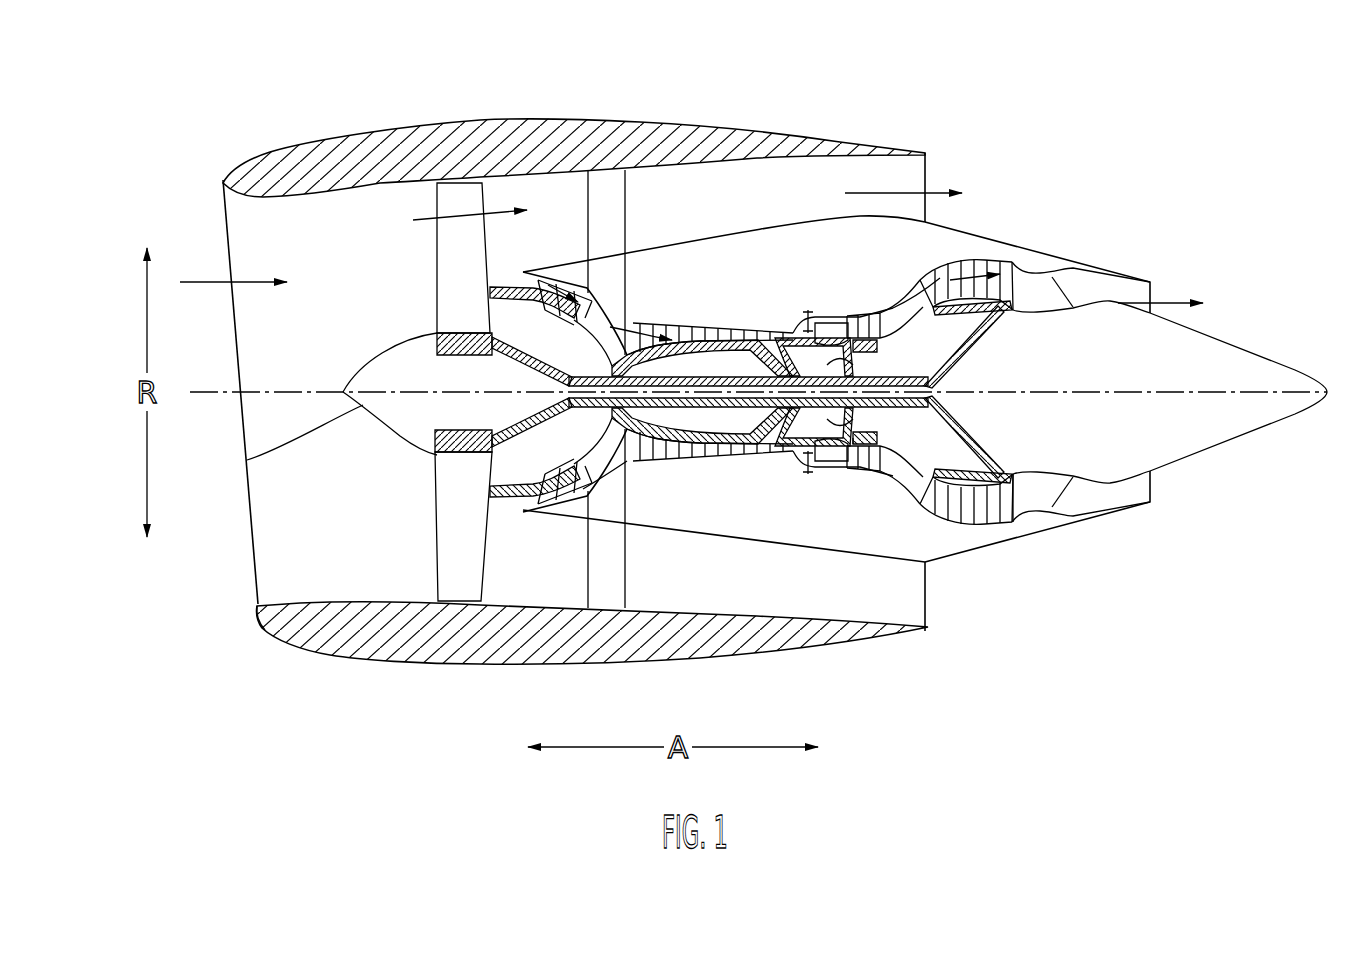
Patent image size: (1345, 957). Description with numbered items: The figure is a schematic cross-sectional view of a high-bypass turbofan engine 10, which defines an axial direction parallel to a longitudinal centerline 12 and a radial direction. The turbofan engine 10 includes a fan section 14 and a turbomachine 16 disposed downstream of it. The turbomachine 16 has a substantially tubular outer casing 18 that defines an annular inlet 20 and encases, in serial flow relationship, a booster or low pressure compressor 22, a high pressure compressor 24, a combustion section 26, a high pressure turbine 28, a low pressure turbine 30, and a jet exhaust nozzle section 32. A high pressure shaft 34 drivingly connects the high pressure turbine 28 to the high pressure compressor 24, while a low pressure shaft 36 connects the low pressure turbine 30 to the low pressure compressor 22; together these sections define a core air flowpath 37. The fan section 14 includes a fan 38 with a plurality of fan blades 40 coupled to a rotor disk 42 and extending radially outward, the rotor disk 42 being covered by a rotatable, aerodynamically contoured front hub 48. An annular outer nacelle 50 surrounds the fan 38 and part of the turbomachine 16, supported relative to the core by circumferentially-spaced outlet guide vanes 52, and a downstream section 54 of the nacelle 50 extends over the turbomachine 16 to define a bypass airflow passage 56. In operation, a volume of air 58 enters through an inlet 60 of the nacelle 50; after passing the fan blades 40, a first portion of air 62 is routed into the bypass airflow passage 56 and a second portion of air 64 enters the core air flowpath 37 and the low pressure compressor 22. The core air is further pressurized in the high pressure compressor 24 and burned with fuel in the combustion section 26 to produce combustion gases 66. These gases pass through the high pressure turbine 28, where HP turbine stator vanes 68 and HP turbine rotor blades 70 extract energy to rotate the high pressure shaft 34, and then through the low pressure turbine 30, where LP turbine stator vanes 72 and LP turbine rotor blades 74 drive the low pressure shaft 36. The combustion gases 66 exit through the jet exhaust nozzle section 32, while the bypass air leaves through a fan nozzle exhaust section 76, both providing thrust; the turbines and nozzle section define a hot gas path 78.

The turbofan engine 10 is at (1068, 138).
The longitudinal centerline 12 is at (1090, 389).
The fan section 14 is at (393, 210).
The turbomachine 16 is at (745, 277).
The outer casing 18 is at (782, 553).
The annular inlet 20 is at (530, 497).
The low pressure compressor 22 is at (584, 478).
The high pressure compressor 24 is at (667, 455).
The combustion section 26 is at (823, 463).
The high pressure turbine 28 is at (897, 463).
The low pressure turbine 30 is at (1010, 524).
The jet exhaust nozzle section 32 is at (1073, 495).
The high pressure shaft 34 is at (862, 348).
The low pressure shaft 36 is at (935, 367).
The core air flowpath 37 is at (615, 460).
The fan 38 is at (407, 290).
The fan blades 40 is at (437, 543).
The rotor disk 42 is at (418, 333).
The front hub 48 is at (247, 460).
The outer nacelle 50 is at (483, 664).
The outlet guide vanes 52 is at (627, 200).
The downstream section of the nacelle 54 is at (870, 158).
The bypass airflow passage 56 is at (774, 208).
The volume of air 58 is at (222, 283).
The inlet 60 is at (257, 605).
The first portion of air 62 is at (450, 218).
The second portion of air 64 is at (523, 274).
The combustion gases 66 is at (968, 268).
The HP turbine stator vanes 68 is at (840, 467).
The HP turbine rotor blades 70 is at (853, 448).
The LP turbine stator vanes 72 is at (937, 502).
The LP turbine rotor blades 74 is at (947, 512).
The fan nozzle exhaust section 76 is at (915, 178).
The hot gas path 78 is at (908, 298).